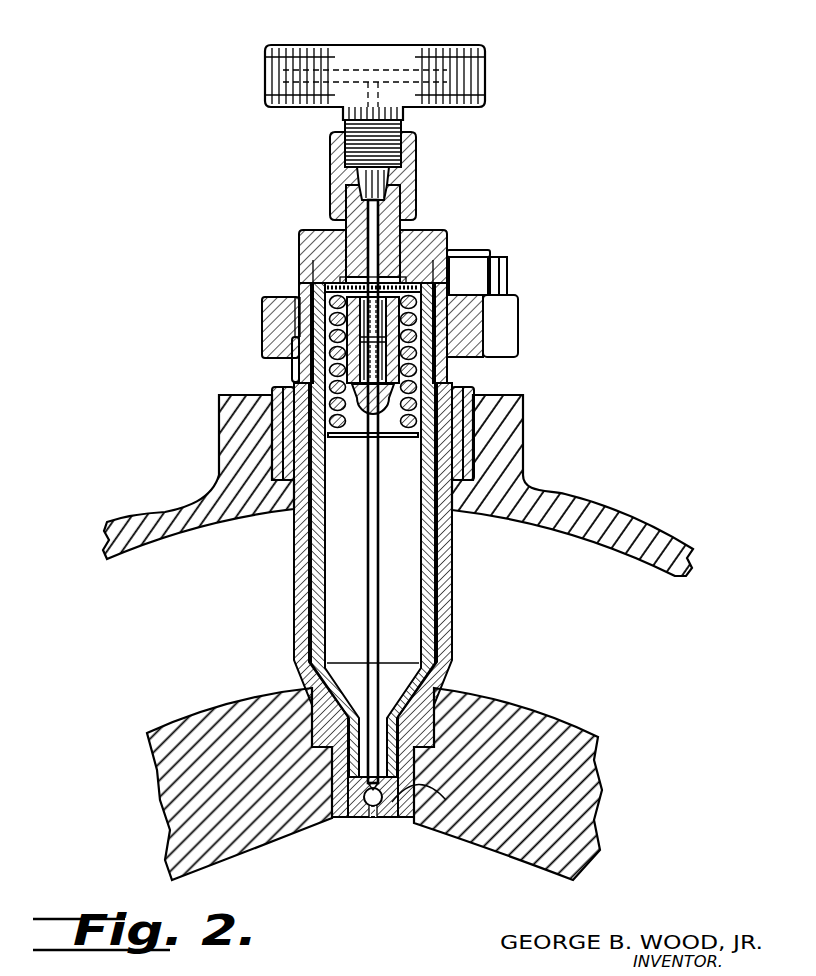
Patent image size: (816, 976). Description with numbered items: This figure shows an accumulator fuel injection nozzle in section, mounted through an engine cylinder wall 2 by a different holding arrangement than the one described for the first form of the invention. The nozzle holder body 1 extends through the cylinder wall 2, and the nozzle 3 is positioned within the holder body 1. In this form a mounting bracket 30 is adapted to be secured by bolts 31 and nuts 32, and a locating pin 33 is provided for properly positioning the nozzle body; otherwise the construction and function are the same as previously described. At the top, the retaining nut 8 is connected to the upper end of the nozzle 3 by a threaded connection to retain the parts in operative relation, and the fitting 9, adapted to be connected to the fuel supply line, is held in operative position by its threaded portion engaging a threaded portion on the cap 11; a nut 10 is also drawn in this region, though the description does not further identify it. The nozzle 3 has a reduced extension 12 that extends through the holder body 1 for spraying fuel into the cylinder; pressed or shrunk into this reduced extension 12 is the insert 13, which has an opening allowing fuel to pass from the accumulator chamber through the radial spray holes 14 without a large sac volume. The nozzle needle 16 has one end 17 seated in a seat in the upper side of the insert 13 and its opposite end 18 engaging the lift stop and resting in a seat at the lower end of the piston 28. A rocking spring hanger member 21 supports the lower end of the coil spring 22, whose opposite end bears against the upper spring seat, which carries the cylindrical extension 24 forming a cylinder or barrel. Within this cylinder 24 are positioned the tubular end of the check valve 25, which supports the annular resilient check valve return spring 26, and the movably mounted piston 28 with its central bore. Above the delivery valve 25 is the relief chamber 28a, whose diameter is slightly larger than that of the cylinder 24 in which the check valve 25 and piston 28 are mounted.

The nozzle holder body 1 is at (443, 592).
The cylinder wall 2 is at (590, 537).
The nozzle 3 is at (310, 575).
The retaining nut 8 is at (300, 243).
The fitting 9 is at (382, 60).
The packing nut 10 is at (417, 145).
The cap 11 is at (419, 205).
The reduced extension 12 is at (348, 818).
The insert 13 is at (392, 818).
The radial spray holes 14 is at (371, 820).
The nozzle needle 16 is at (370, 643).
The end of nozzle needle 17 is at (432, 800).
The opposite end of nozzle needle 18 is at (362, 414).
The rocking spring hanger member 21 is at (404, 418).
The coil spring 22 is at (445, 376).
The cylindrical extension 24 is at (435, 350).
The check valve 25 is at (298, 312).
The check valve return spring 26 is at (300, 280).
The piston 28 is at (328, 347).
The relief chamber 28a is at (345, 282).
The mounting bracket 30 is at (470, 330).
The bolts 31 is at (470, 248).
The nuts 32 is at (497, 272).
The locating pin 33 is at (292, 372).